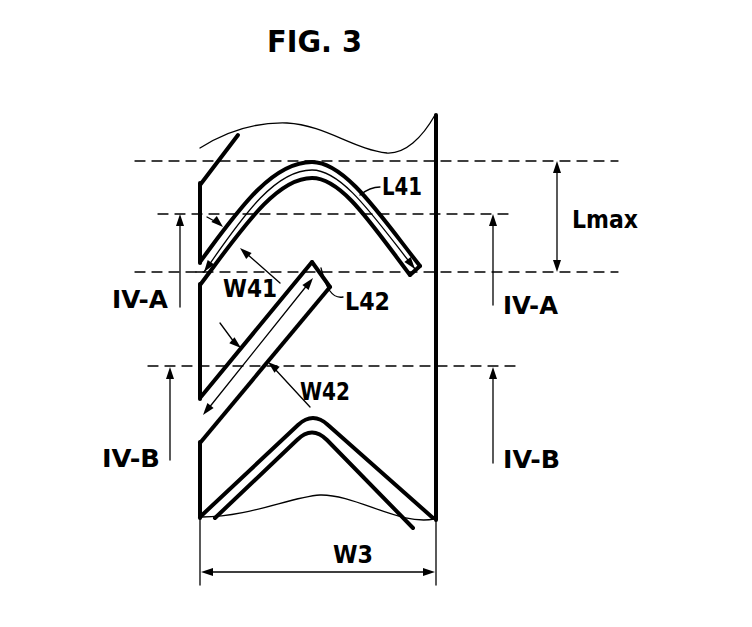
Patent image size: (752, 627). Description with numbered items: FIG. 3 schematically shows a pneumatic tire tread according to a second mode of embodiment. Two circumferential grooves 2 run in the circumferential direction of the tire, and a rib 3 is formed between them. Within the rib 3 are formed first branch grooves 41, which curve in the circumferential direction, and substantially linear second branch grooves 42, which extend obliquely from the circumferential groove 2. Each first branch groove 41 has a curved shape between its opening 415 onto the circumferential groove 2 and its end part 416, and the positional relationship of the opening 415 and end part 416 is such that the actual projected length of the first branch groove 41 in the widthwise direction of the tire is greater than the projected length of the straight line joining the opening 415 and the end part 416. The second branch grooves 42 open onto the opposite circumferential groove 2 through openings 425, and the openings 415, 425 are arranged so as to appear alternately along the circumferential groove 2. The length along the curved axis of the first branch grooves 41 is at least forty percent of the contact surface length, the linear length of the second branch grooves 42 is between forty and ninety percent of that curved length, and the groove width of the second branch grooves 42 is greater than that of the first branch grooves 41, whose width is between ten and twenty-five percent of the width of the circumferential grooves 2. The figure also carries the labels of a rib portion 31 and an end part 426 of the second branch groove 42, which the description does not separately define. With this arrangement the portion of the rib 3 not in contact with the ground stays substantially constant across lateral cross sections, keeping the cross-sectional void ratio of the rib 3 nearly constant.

The circumferential groove 2 is at (185, 187).
The rib 3 is at (308, 478).
The body portion 31 is at (393, 344).
The first branch groove 41 is at (243, 232).
The second branch groove 42 is at (288, 310).
The opening 415 is at (197, 272).
The end part 416 is at (419, 262).
The opening 425 is at (197, 422).
The tip of second protrusion 426 is at (320, 262).